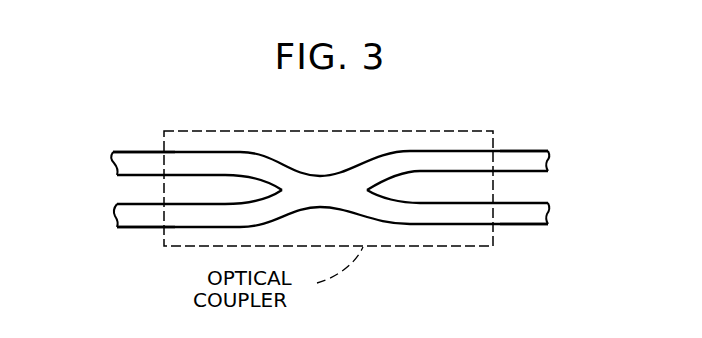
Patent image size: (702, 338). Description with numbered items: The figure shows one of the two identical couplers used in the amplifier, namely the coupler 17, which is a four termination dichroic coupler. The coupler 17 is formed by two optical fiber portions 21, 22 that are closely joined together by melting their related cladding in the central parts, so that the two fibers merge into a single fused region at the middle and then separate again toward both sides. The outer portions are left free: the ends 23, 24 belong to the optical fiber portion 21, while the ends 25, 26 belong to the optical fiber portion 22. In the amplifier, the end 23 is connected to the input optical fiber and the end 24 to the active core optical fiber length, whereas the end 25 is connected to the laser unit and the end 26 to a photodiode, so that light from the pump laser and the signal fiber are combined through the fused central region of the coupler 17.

The coupler 17 is at (353, 139).
The optical fiber portion 21 is at (188, 165).
The optical fiber portion 22 is at (187, 218).
The end 23 is at (125, 152).
The end 24 is at (528, 157).
The end 25 is at (132, 218).
The end 26 is at (522, 212).